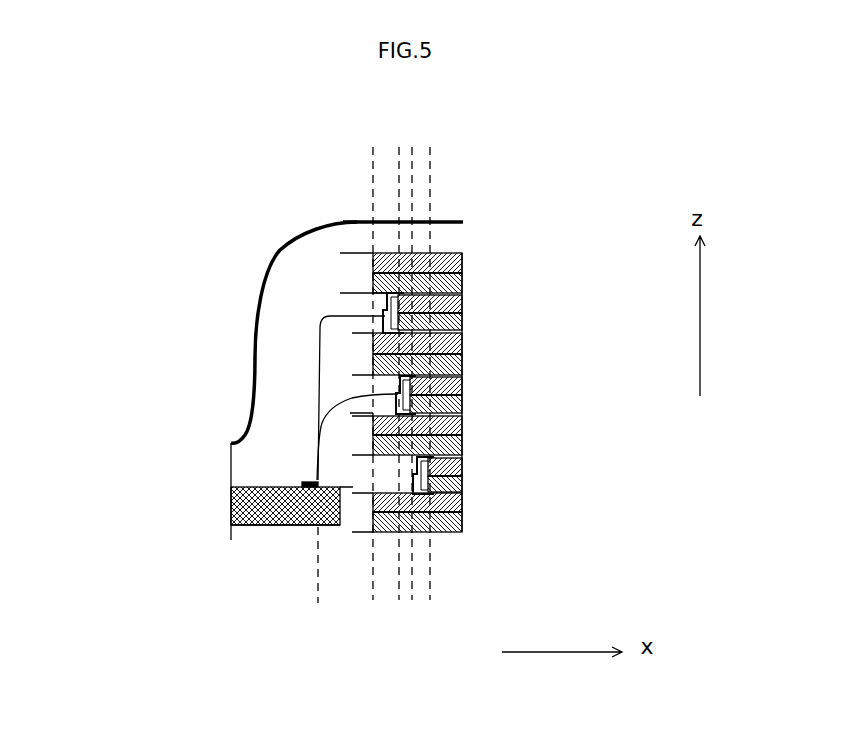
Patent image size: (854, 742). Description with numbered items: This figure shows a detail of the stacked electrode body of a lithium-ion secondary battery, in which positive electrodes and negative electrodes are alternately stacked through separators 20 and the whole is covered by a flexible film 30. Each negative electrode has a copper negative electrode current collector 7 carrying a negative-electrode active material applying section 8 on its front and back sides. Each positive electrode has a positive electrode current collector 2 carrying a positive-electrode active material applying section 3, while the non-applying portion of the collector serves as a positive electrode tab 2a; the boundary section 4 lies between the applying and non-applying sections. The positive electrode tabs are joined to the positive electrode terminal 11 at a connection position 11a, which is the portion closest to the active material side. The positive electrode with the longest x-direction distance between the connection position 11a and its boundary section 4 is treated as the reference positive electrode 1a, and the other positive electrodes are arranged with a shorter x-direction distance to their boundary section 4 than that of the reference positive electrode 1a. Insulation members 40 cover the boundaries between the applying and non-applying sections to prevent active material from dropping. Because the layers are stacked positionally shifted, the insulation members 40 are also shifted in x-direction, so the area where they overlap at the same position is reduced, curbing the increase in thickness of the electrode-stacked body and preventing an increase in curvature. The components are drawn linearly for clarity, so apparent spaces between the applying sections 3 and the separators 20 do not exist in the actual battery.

The reference positive electrode 1a is at (471, 489).
The positive electrode current collector 2 is at (462, 308).
The positive electrode tab 2a is at (317, 382).
The positive-electrode active material applying section 3 is at (462, 327).
The boundary section 4 is at (462, 323).
The negative electrode current collector 7 is at (462, 270).
The negative-electrode active material applying section 8 is at (448, 253).
The positive electrode terminal 11 is at (275, 527).
The connection position 11a is at (297, 527).
The separator 20 is at (383, 302).
The flexible film 30 is at (277, 253).
The insulation member 40 is at (387, 303).